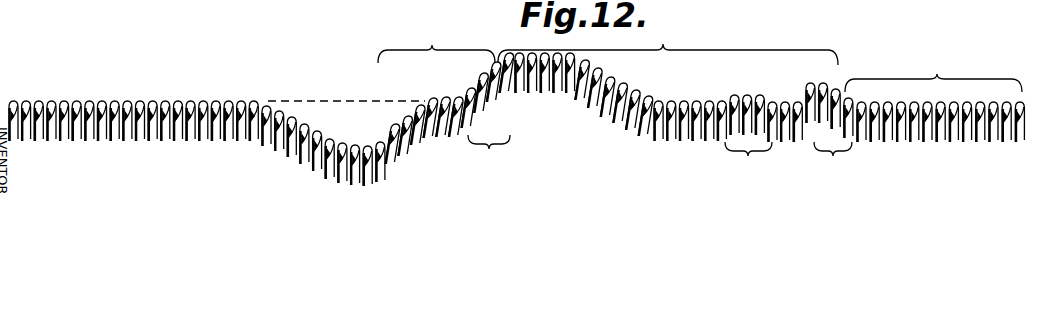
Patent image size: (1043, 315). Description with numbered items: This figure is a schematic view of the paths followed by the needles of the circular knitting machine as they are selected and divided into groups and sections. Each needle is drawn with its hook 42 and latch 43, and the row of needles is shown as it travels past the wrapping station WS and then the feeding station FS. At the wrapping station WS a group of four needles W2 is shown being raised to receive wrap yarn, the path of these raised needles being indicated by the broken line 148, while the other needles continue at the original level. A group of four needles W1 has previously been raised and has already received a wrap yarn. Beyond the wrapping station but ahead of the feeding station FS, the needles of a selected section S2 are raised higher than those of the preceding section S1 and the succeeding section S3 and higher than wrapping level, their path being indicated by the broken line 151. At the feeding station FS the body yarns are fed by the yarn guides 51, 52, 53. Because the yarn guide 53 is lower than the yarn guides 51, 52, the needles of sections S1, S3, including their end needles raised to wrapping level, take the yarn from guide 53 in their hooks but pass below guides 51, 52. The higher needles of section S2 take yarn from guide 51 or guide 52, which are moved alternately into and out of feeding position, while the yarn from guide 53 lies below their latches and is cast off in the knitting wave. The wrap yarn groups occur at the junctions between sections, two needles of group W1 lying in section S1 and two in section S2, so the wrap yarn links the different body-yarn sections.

The hook 42 is at (176, 104).
The latch 43 is at (214, 112).
The yarn guide 51 is at (368, 141).
The yarn guide 52 is at (381, 142).
The yarn guide 53 is at (421, 110).
The broken line 151 is at (360, 102).
The broken line 148 is at (812, 82).
The preceding section S1 is at (436, 46).
The selected section S2 is at (668, 99).
The succeeding section S3 is at (933, 74).
The group of four needles W1 is at (489, 150).
The group of four needles W2 is at (833, 156).
The wrapping station WS is at (801, 70).
The feeding station FS is at (407, 83).